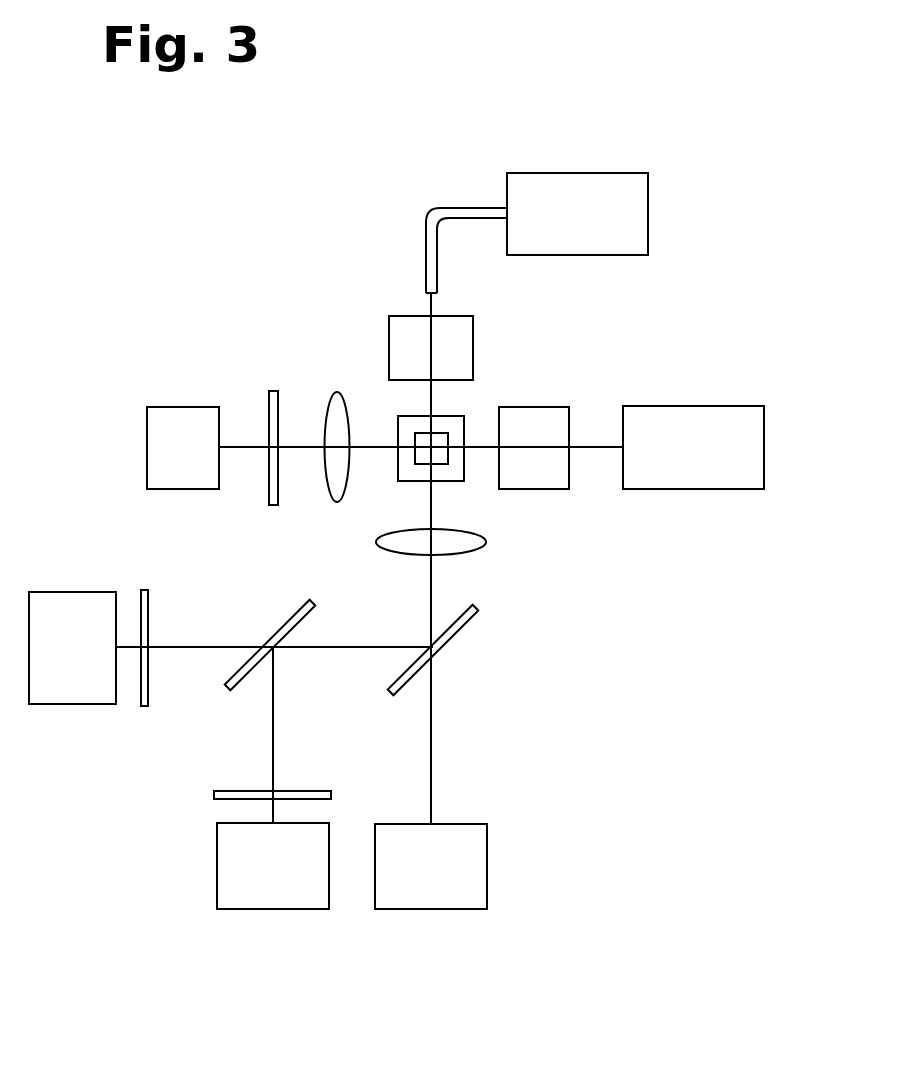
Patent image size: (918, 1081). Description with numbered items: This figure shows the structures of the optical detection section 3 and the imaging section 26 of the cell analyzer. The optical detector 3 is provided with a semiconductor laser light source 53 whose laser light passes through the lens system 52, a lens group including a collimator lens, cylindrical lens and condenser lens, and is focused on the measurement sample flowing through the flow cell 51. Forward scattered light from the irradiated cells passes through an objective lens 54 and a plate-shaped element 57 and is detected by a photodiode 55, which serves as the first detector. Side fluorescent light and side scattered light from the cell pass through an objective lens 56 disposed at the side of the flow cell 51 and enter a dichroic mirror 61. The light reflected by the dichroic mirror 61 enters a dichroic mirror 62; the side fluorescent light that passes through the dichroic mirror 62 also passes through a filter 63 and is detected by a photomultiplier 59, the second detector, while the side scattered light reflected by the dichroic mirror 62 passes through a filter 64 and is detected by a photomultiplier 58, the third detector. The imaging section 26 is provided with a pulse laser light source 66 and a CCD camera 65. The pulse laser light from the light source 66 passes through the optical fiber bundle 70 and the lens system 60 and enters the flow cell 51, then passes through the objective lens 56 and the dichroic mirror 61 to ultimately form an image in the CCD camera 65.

The optical detection section 3 is at (633, 332).
The imaging section 26 is at (510, 762).
The flow cell 51 is at (452, 415).
The lens system 52 is at (559, 407).
The semiconductor laser light source 53 is at (717, 406).
The objective lens 54 is at (331, 395).
The photodiode 55 is at (176, 407).
The objective lens 56 is at (485, 540).
The filter plate 57 is at (272, 391).
The photomultiplier 58 is at (217, 873).
The photomultiplier 59 is at (70, 592).
The lens system 60 is at (473, 330).
The dichroic mirror 61 is at (468, 622).
The dichroic mirror 62 is at (290, 606).
The filter 63 is at (148, 600).
The filter 64 is at (306, 791).
The CCD camera 65 is at (487, 883).
The pulse laser light source 66 is at (648, 198).
The optical fiber bundle 70 is at (428, 218).